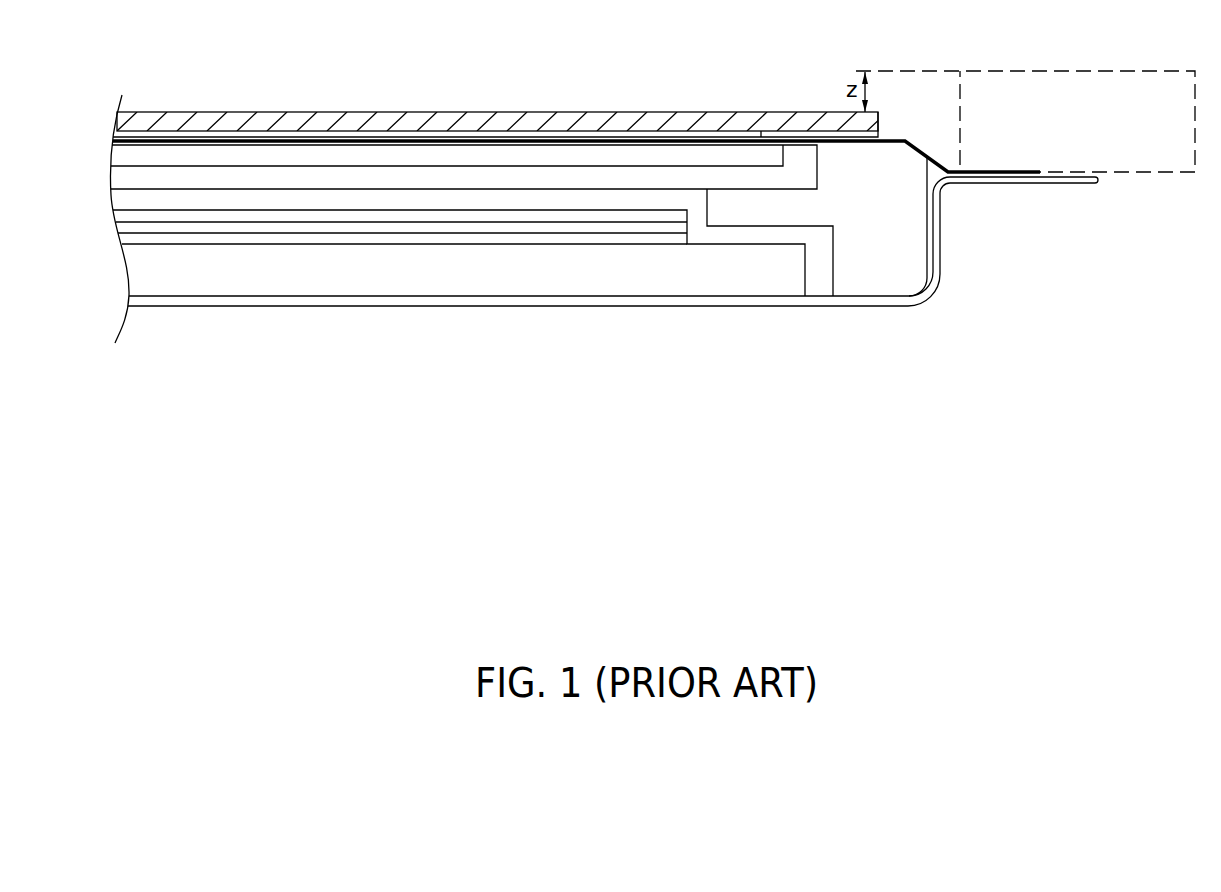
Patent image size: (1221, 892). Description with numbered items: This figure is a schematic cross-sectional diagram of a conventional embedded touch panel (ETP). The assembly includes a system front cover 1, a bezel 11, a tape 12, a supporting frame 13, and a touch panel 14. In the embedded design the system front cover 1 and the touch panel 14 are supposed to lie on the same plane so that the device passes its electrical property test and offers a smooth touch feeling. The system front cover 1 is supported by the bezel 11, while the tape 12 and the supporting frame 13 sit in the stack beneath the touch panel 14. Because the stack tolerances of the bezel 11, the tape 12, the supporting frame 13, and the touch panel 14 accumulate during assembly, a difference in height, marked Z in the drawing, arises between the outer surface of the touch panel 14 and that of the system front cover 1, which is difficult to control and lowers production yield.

The system front cover 1 is at (1090, 136).
The bezel 11 is at (1097, 184).
The tape 12 is at (1040, 173).
The supporting frame 13 is at (915, 290).
The touch panel 14 is at (482, 112).